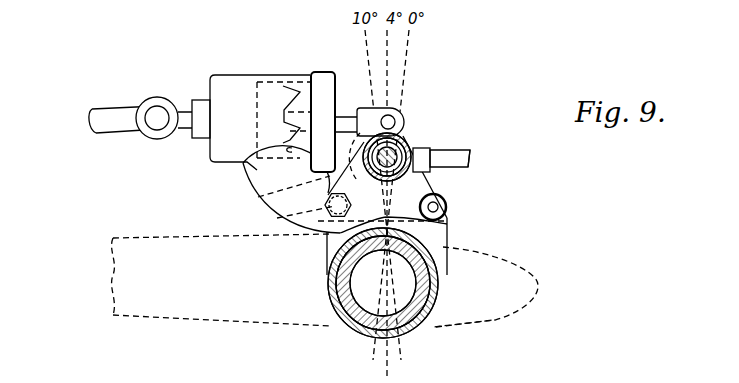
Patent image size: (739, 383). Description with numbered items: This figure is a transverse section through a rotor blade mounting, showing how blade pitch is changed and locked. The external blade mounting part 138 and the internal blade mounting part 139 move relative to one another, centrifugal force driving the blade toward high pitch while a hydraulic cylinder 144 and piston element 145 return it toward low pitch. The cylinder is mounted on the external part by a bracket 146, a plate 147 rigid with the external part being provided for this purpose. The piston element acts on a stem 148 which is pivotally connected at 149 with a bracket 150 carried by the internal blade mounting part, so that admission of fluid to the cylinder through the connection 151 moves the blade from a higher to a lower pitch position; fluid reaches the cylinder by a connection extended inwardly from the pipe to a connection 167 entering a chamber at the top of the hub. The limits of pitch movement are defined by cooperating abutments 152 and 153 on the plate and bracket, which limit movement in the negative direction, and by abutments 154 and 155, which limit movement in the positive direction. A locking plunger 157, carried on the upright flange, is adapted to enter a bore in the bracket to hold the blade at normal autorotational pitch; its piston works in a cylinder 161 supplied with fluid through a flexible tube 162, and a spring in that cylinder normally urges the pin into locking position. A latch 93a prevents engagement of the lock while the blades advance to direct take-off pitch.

The latch 93a is at (349, 156).
The external blade mounting part 138 is at (443, 254).
The internal blade mounting part 139 is at (392, 334).
The hydraulic cylinder 144 is at (224, 80).
The piston element 145 is at (268, 82).
The bracket 146 is at (262, 173).
The plate 147 is at (435, 238).
The stem 148 is at (340, 64).
The pivotal connection 149 is at (395, 119).
The bracket 150 is at (405, 141).
The connection 151 is at (153, 128).
The abutment 152 is at (443, 199).
The abutment 153 is at (432, 182).
The abutment 154 is at (278, 193).
The abutment 155 is at (291, 216).
The locking plunger 157 is at (418, 152).
The cylinder 161 is at (351, 203).
The flexible tube 162 is at (470, 157).
The connection 167 is at (124, 107).